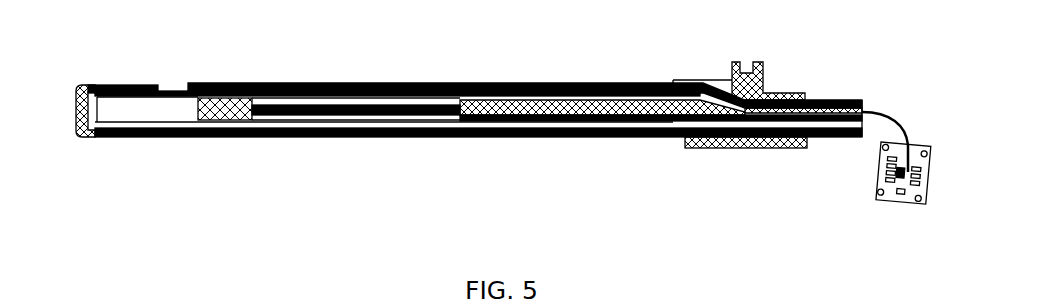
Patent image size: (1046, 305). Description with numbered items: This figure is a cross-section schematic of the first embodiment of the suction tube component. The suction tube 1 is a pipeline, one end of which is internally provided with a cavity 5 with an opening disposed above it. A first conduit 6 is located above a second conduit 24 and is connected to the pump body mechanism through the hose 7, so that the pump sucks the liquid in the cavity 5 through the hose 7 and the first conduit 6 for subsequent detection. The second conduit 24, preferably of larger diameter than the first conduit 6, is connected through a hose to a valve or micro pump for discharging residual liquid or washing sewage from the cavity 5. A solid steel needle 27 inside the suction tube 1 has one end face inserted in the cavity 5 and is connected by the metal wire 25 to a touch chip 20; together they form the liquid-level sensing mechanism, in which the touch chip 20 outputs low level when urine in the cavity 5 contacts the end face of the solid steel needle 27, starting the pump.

The suction tube 1 is at (80, 132).
The cavity 5 is at (150, 110).
The first conduit 6 is at (110, 84).
The second conduit 24 is at (125, 128).
The solid steel needle 27 is at (302, 83).
The metal wire 25 is at (457, 83).
The hose 7 is at (833, 106).
The touch chip 20 is at (870, 178).